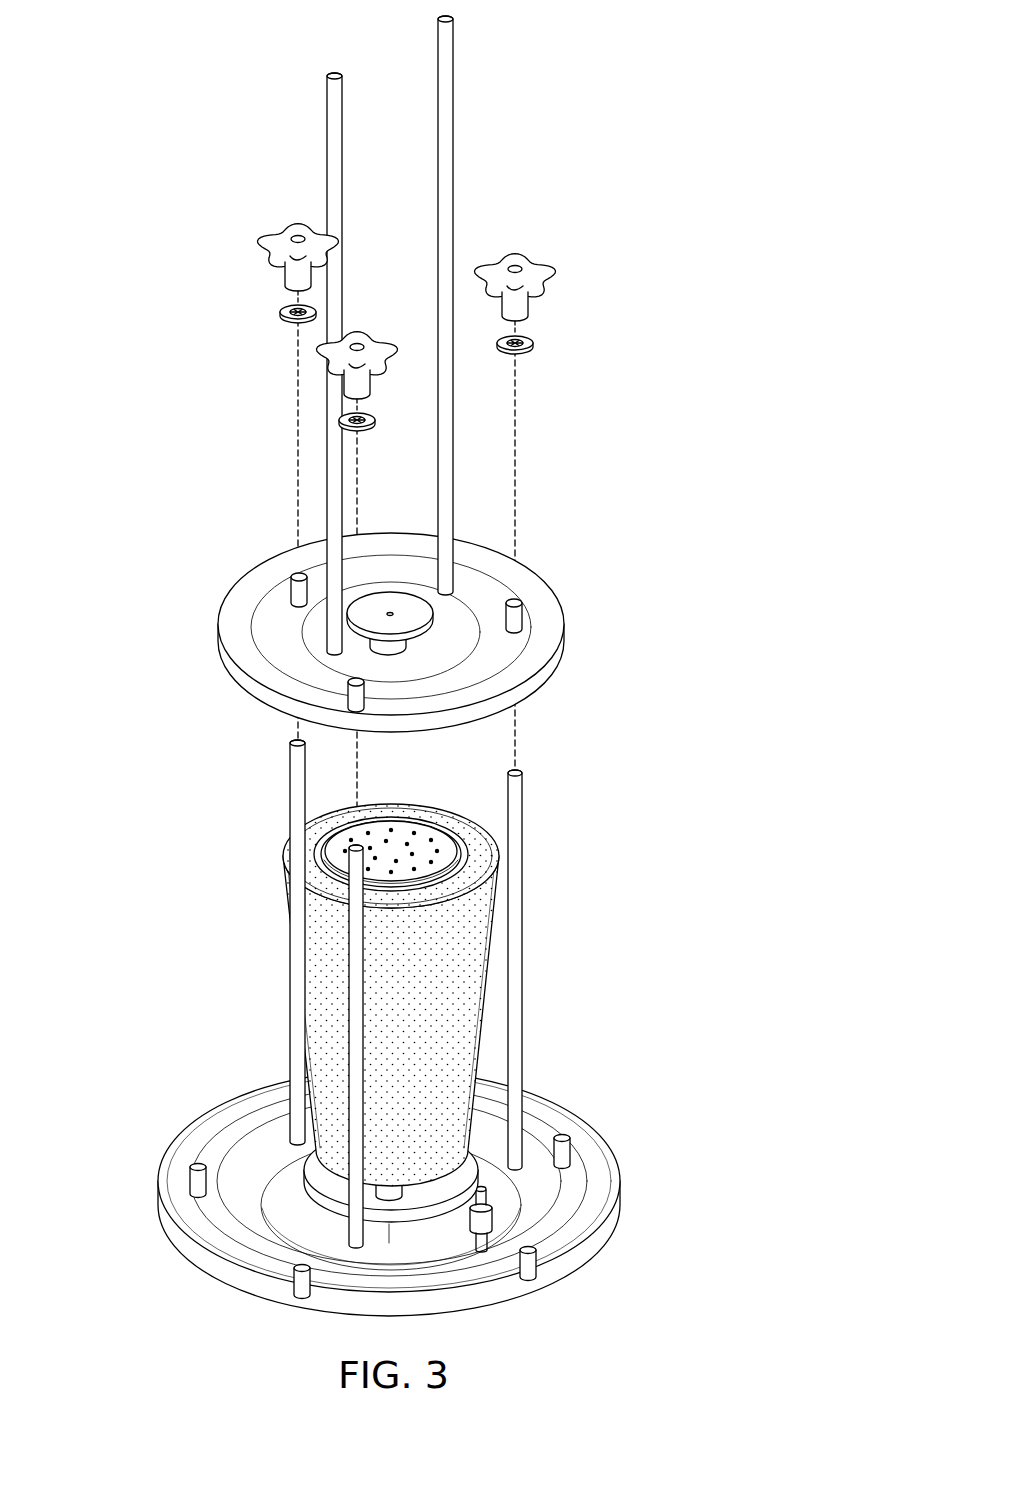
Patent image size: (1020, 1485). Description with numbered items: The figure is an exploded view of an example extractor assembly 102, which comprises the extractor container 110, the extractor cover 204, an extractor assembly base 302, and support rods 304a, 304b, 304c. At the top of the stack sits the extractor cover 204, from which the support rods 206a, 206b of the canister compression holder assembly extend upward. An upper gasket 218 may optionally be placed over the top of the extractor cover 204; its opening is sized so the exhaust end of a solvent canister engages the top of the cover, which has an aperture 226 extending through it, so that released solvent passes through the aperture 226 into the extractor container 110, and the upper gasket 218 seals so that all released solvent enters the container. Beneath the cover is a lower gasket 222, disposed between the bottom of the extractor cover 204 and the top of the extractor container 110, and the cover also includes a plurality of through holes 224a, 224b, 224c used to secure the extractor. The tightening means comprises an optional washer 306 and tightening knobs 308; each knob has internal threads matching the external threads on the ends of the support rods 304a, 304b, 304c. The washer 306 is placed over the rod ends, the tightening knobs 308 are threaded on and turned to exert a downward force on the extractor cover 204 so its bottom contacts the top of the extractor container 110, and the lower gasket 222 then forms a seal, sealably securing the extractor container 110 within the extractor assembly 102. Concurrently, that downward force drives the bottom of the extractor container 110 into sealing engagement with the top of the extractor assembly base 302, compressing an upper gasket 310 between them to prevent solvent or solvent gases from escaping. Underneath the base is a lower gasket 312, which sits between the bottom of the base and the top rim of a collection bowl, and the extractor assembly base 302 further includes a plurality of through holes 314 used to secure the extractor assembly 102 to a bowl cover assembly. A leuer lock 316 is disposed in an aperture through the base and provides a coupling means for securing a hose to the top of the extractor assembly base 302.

The extractor assembly 102 is at (373, 684).
The extractor container 110 is at (492, 990).
The extractor cover 204 is at (397, 631).
The support rod 206a is at (327, 145).
The support rod 206b is at (455, 88).
The upper gasket 218 is at (391, 604).
The lower gasket 222 is at (256, 652).
The through hole 224a is at (298, 577).
The through hole 224b is at (520, 598).
The through hole 224c is at (362, 681).
The aperture 226 is at (394, 654).
The extractor assembly base 302 is at (394, 1211).
The support rod 304a is at (290, 790).
The support rod 304b is at (522, 858).
The support rod 304c is at (366, 1046).
The washer 306 is at (283, 308).
The tightening knob 308 is at (276, 236).
The upper gasket 310 is at (412, 1212).
The lower gasket 312 is at (198, 1243).
The through hole 314 is at (190, 1165).
The leuer lock 316 is at (481, 1252).